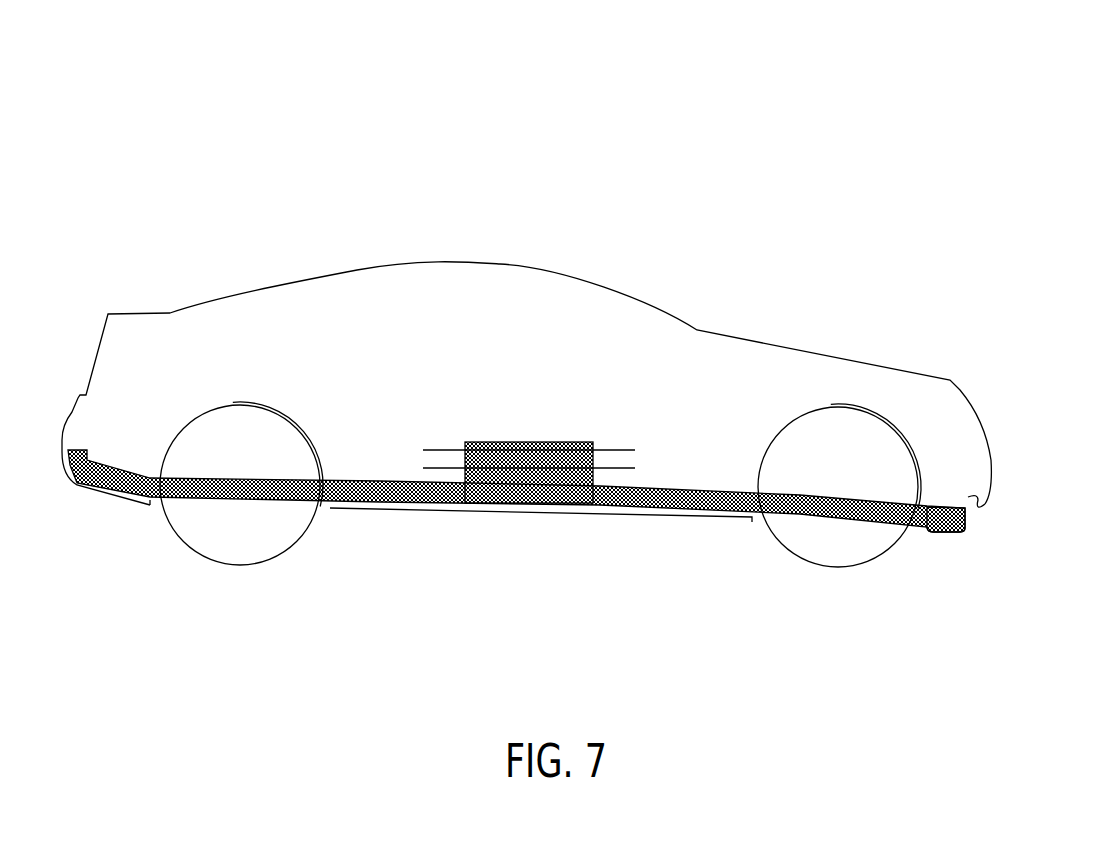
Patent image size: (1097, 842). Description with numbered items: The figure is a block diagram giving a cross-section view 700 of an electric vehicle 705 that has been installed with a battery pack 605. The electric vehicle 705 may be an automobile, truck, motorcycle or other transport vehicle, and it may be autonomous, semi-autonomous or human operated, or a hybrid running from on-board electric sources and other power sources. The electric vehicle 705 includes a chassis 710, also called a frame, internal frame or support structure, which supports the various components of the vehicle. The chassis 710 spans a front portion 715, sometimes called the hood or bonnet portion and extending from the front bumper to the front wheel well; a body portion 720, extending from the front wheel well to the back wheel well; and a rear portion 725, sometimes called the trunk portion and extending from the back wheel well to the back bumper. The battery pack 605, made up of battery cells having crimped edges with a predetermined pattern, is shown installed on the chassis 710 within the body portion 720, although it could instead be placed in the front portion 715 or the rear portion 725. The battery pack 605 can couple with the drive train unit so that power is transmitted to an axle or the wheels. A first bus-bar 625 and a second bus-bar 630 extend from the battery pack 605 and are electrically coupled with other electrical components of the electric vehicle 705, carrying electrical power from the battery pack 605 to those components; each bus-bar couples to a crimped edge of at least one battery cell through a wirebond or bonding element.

The cross-section view 700 is at (567, 60).
The electric vehicle 705 is at (519, 252).
The battery pack 605 is at (518, 424).
The first bus-bar 625 is at (632, 441).
The second bus-bar 630 is at (649, 460).
The chassis 710 is at (958, 503).
The front portion 715 is at (1003, 557).
The body portion 720 is at (740, 557).
The rear portion 725 is at (193, 557).